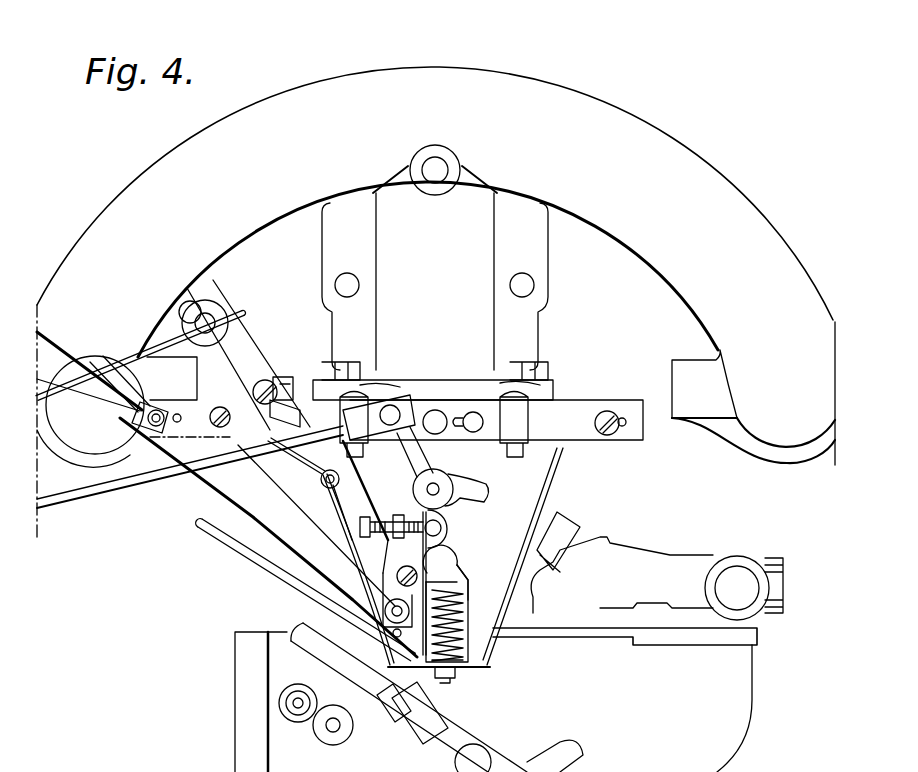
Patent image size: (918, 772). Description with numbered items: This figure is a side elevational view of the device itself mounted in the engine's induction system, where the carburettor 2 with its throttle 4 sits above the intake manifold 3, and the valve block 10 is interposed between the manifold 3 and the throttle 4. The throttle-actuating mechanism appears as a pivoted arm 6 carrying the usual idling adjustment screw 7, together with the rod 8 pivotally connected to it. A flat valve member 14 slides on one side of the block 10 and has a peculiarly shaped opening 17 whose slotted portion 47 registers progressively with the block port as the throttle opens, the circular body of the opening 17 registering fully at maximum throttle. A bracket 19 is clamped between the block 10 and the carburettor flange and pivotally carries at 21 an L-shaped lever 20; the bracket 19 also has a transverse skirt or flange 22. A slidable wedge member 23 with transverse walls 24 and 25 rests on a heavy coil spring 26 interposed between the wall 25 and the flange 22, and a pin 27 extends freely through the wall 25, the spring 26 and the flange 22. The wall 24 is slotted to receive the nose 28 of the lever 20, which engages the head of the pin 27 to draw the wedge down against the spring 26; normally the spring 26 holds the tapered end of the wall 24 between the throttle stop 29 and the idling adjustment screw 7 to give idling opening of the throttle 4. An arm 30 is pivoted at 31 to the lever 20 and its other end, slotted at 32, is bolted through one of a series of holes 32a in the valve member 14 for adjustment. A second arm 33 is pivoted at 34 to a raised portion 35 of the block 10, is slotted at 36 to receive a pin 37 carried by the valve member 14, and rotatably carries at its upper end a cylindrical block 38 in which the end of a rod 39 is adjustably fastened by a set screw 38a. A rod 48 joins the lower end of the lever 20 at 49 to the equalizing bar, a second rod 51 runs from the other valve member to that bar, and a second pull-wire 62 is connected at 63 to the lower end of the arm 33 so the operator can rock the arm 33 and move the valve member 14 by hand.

The carburettor 2 is at (733, 752).
The intake manifold 3 is at (655, 134).
The throttle 4 is at (468, 484).
The pivoted arm 6 is at (405, 458).
The idling adjustment screw 7 is at (364, 521).
The rod 8 is at (70, 500).
The valve block 10 is at (586, 406).
The valve member 14 is at (580, 436).
The opening 17 is at (482, 412).
The bracket 19 is at (540, 500).
The L-shaped lever 20 is at (397, 576).
The pivot 21 is at (373, 538).
The flange 22 is at (476, 668).
The wedge member 23 is at (470, 582).
The wall 24 is at (420, 540).
The wall 25 is at (468, 597).
The coil spring 26 is at (460, 632).
The pin 27 is at (470, 660).
The nose 28 is at (442, 562).
The throttle stop 29 is at (442, 528).
The arm 30 is at (262, 505).
The pivot 31 is at (388, 603).
The slot 32 is at (128, 376).
The holes 32a is at (180, 426).
The second arm 33 is at (244, 341).
The pivot 34 is at (268, 380).
The raised portion 35 is at (291, 377).
The slot 36 is at (255, 412).
The pin 37 is at (342, 444).
The cylindrical block 38 is at (215, 318).
The set screw 38a is at (184, 311).
The rod 39 is at (63, 386).
The slotted portion 47 is at (463, 420).
The rod 48 is at (262, 568).
The connection 49 is at (432, 662).
The second rod 51 is at (90, 411).
The second pull-wire 62 is at (287, 473).
The connection 63 is at (320, 481).